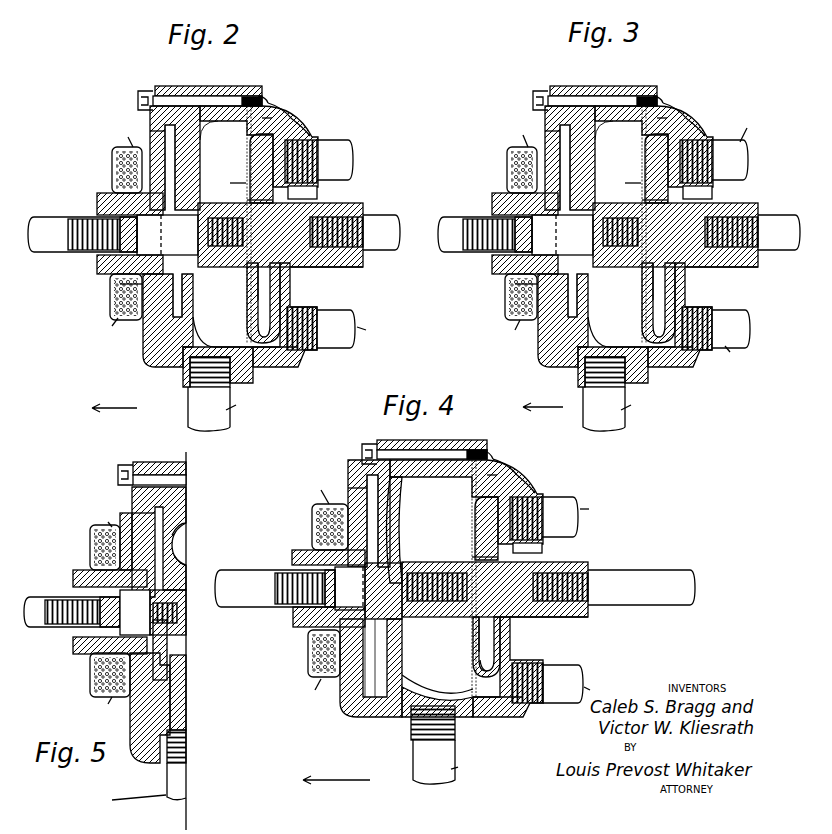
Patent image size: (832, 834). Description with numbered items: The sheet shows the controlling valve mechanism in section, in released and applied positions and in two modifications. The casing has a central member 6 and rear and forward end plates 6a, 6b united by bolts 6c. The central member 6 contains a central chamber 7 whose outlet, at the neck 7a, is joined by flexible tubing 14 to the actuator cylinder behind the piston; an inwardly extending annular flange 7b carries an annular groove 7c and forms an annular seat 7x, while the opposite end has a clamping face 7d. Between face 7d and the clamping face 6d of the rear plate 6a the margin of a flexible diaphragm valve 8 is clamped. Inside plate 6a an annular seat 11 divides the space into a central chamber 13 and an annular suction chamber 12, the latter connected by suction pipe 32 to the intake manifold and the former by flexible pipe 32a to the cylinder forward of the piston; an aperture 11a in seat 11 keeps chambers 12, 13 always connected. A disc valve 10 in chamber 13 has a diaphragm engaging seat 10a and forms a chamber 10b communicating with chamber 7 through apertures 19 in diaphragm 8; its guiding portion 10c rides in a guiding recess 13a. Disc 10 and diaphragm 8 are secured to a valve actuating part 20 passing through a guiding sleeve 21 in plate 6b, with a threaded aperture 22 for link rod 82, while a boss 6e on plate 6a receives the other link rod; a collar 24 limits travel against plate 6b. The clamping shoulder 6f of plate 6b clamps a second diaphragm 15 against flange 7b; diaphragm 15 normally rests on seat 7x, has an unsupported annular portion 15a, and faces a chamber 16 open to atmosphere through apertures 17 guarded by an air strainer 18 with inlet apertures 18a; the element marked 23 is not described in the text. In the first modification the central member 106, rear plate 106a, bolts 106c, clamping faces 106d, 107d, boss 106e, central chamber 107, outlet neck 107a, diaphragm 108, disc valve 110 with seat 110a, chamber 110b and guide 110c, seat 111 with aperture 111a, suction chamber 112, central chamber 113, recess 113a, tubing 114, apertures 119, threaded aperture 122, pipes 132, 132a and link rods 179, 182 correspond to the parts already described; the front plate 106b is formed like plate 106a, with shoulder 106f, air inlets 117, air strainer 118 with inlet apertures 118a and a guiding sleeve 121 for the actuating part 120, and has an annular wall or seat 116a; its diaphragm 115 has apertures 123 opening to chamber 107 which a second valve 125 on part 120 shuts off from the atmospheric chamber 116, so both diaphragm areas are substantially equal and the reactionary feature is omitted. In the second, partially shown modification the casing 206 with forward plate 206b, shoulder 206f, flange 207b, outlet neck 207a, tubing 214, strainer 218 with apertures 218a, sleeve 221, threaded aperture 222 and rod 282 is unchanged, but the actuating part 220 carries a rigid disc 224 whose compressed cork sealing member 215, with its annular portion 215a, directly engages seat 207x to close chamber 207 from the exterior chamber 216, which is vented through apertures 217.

In FIG. 2, the central casing member 6 is at (196, 86).
In FIG. 3, the central casing member 6 is at (629, 132).
In FIG. 2, the rear end plate 6a is at (266, 97).
In FIG. 3, the rear end plate 6a is at (662, 79).
In FIG. 2, the forward end plate 6b is at (158, 86).
In FIG. 3, the forward end plate 6b is at (601, 77).
In FIG. 2, the screws or bolts 6c is at (280, 106).
In FIG. 3, the screws or bolts 6c is at (675, 93).
In FIG. 2, the clamping face 6d is at (298, 122).
In FIG. 3, the clamping face 6d is at (692, 112).
In FIG. 2, the boss 6e is at (348, 268).
In FIG. 2, the annular clamping shoulder 6f is at (148, 106).
In FIG. 3, the annular clamping shoulder 6f is at (532, 93).
In FIG. 2, the central chamber 7 is at (218, 336).
In FIG. 3, the central chamber 7 is at (613, 326).
In FIG. 2, the threaded outlet neck 7a is at (188, 376).
In FIG. 3, the threaded outlet neck 7a is at (584, 372).
In FIG. 2, the annular flange 7b is at (212, 133).
In FIG. 3, the annular flange 7b is at (647, 129).
In FIG. 2, the annular groove 7c is at (116, 160).
In FIG. 3, the annular groove 7c is at (617, 170).
In FIG. 2, the annular clamping face 7d is at (251, 97).
In FIG. 3, the annular clamping face 7d is at (641, 79).
In FIG. 2, the annular seat 7x is at (225, 181).
In FIG. 3, the annular seat 7x is at (679, 174).
In FIG. 2, the flexible diaphragm valve 8 is at (274, 120).
In FIG. 3, the flexible diaphragm valve 8 is at (677, 111).
In FIG. 2, the disc valve 10 is at (276, 150).
In FIG. 3, the disc valve 10 is at (658, 168).
In FIG. 2, the annular diaphragm engaging seat 10a is at (247, 152).
In FIG. 3, the annular diaphragm engaging seat 10a is at (683, 224).
In FIG. 2, the chamber 10b is at (256, 274).
In FIG. 3, the chamber 10b is at (698, 281).
In FIG. 2, the guiding portion 10c is at (340, 203).
In FIG. 3, the guiding portion 10c is at (718, 187).
In FIG. 2, the annular diaphragm engaging seat 11 is at (300, 134).
In FIG. 3, the annular diaphragm engaging seat 11 is at (701, 145).
In FIG. 2, the aperture 11a is at (262, 349).
In FIG. 3, the aperture 11a is at (670, 364).
In FIG. 2, the annular chamber 12 is at (300, 360).
In FIG. 3, the annular chamber 12 is at (681, 323).
In FIG. 2, the central chamber 13 is at (279, 284).
In FIG. 3, the central chamber 13 is at (675, 273).
In FIG. 2, the guiding recess 13a is at (316, 191).
In FIG. 3, the guiding recess 13a is at (721, 189).
In FIG. 2, the flexible tubing 14 is at (198, 422).
In FIG. 3, the flexible tubing 14 is at (635, 409).
In FIG. 2, the diaphragm 15 is at (168, 128).
In FIG. 3, the diaphragm 15 is at (531, 148).
In FIG. 2, the annular portion 15a is at (173, 292).
In FIG. 3, the annular portion 15a is at (523, 295).
In FIG. 2, the chamber 16 is at (160, 350).
In FIG. 3, the chamber 16 is at (553, 324).
In FIG. 2, the apertures 17 is at (125, 175).
In FIG. 3, the apertures 17 is at (509, 157).
In FIG. 2, the air strainer 18 is at (112, 300).
In FIG. 3, the air strainer 18 is at (502, 297).
In FIG. 2, the inlet apertures 18a is at (136, 322).
In FIG. 3, the inlet apertures 18a is at (517, 316).
In FIG. 2, the apertures 19 is at (240, 300).
In FIG. 3, the apertures 19 is at (725, 254).
In FIG. 2, the valve actuating part 20 is at (167, 235).
In FIG. 3, the valve actuating part 20 is at (556, 235).
In FIG. 2, the guiding sleeve 21 is at (100, 268).
In FIG. 3, the guiding sleeve 21 is at (511, 226).
In FIG. 2, the interiorly threaded aperture 22 is at (100, 262).
In FIG. 3, the interiorly threaded aperture 22 is at (503, 201).
In FIG. 2, the air passage 23 is at (160, 131).
In FIG. 3, the air passage 23 is at (520, 143).
In FIG. 2, the collar 24 is at (120, 285).
In FIG. 3, the collar 24 is at (501, 272).
In FIG. 2, the suction pipe 32 is at (341, 313).
In FIG. 3, the suction pipe 32 is at (727, 332).
In FIG. 2, the flexible pipe 32a is at (342, 145).
In FIG. 3, the flexible pipe 32a is at (751, 139).
In FIG. 2, the link rod 82 is at (50, 222).
In FIG. 3, the link rod 82 is at (485, 234).
In FIG. 4, the central casing member 106 is at (445, 492).
In FIG. 4, the rear plate member 106a is at (512, 443).
In FIG. 4, the front end plate 106b is at (432, 439).
In FIG. 4, the screws or bolts 106c is at (526, 459).
In FIG. 4, the clamping face 106d is at (532, 475).
In FIG. 4, the boss 106e is at (574, 608).
In FIG. 4, the annular clamping shoulder 106f is at (358, 446).
In FIG. 4, the central chamber 107 is at (406, 668).
In FIG. 4, the threaded neck 107a is at (410, 733).
In FIG. 4, the annular clamping face 107d is at (488, 435).
In FIG. 4, the diaphragm 108 is at (468, 487).
In FIG. 4, the disc valve 110 is at (468, 528).
In FIG. 4, the annular diaphragm engaging seat 110a is at (459, 578).
In FIG. 4, the chamber 110b is at (459, 634).
In FIG. 4, the guiding portion 110c is at (554, 559).
In FIG. 4, the annular diaphragm engaging seat 111 is at (539, 505).
In FIG. 4, the aperture 111a is at (509, 717).
In FIG. 4, the annular suction chamber 112 is at (523, 670).
In FIG. 4, the central chamber 113 is at (476, 619).
In FIG. 4, the guiding recess 113a is at (570, 544).
In FIG. 4, the flexible tubing 114 is at (446, 766).
In FIG. 4, the diaphragm 115 is at (346, 510).
In FIG. 4, the chamber 116 is at (297, 653).
In FIG. 4, the annular wall or seat 116a is at (316, 473).
In FIG. 4, the air inlets 117 is at (301, 513).
In FIG. 4, the air strainer 118 is at (304, 519).
In FIG. 4, the inlet apertures 118a is at (313, 678).
In FIG. 4, the apertures 119 is at (461, 659).
In FIG. 4, the valve actuating part 120 is at (350, 588).
In FIG. 4, the central guiding sleeve 121 is at (296, 577).
In FIG. 4, the interiorly threaded aperture 122 is at (302, 556).
In FIG. 4, the apertures 123 is at (408, 530).
In FIG. 4, the second valve 125 is at (310, 658).
In FIG. 4, the suction pipe 132 is at (573, 683).
In FIG. 4, the flexible pipe 132a is at (593, 507).
In FIG. 4, the link rod 179 is at (641, 587).
In FIG. 4, the link rod 182 is at (275, 588).
In FIG. 5, the central casing member 206 is at (150, 462).
In FIG. 5, the forward end plate 206b is at (133, 467).
In FIG. 5, the annular clamping shoulder 206f is at (120, 490).
In FIG. 5, the central chamber 207 is at (186, 690).
In FIG. 5, the rear cylinder neck 207a is at (182, 770).
In FIG. 5, the annular flange 207b is at (178, 508).
In FIG. 5, the valve seat 207x is at (180, 540).
In FIG. 5, the flexible tubing 214 is at (186, 740).
In FIG. 5, the sealing valve member 215 is at (162, 665).
In FIG. 5, the annular portion 215a is at (98, 665).
In FIG. 5, the exterior chamber 216 is at (147, 745).
In FIG. 5, the apertures 217 is at (100, 548).
In FIG. 5, the air strainer 218 is at (92, 680).
In FIG. 5, the inlet apertures 218a is at (120, 700).
In FIG. 5, the valve actuating part 220 is at (153, 612).
In FIG. 5, the guiding sleeve 221 is at (75, 645).
In FIG. 5, the interiorly threaded aperture 222 is at (60, 597).
In FIG. 5, the rigid disc 224 is at (140, 518).
In FIG. 5, the link rod 282 is at (40, 602).